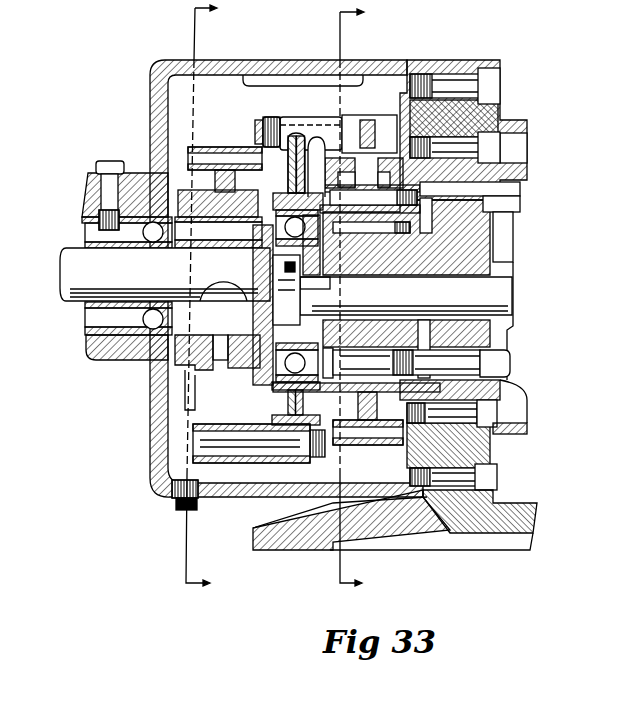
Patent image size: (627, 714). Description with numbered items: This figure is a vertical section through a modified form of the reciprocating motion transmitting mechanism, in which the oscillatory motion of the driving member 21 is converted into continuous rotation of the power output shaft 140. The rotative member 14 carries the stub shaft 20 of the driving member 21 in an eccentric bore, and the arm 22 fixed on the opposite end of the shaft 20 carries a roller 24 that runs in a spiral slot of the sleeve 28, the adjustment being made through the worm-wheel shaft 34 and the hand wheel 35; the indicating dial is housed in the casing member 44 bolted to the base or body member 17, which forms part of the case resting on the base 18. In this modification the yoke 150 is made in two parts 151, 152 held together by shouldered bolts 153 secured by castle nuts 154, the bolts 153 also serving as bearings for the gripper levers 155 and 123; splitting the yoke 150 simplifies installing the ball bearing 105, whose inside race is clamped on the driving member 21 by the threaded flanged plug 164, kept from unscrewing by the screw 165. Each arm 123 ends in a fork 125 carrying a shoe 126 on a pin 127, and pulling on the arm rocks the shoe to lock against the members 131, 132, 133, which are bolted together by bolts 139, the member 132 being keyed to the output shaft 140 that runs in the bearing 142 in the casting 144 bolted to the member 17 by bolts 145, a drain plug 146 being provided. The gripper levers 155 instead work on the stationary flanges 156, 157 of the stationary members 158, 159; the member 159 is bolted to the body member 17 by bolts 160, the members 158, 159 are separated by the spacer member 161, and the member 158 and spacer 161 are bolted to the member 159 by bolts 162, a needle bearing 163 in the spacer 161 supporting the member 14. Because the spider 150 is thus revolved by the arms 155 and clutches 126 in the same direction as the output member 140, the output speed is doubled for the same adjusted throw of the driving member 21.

The member 14 is at (462, 250).
The member 17 is at (480, 112).
The base 18 is at (515, 518).
The stub shaft 20 is at (406, 296).
The driving member 21 is at (320, 305).
The arm 22 is at (500, 232).
The roller 24 is at (500, 205).
The sleeve 28 is at (505, 180).
The shaft 34 is at (215, 297).
The hand wheel 35 is at (365, 298).
The casing member 44 is at (527, 430).
The ball bearing 105 is at (283, 372).
The arms 123 is at (225, 462).
The fork 125 is at (200, 150).
The shoe 126 is at (175, 167).
The pin 127 is at (220, 183).
The member 131 is at (227, 362).
The member 132 is at (207, 244).
The member 133 is at (212, 343).
The bolts 139 is at (218, 209).
The power output shaft 140 is at (165, 274).
The bearing 142 is at (150, 342).
The casting 144 is at (158, 106).
The bolts 145 is at (490, 80).
The drain plug 146 is at (175, 503).
The yoke 150 is at (302, 130).
The part 151 is at (290, 128).
The part 152 is at (318, 118).
The shouldered bolts 153 is at (278, 115).
The castle nuts 154 is at (264, 123).
The gripper levers 155 is at (383, 128).
The stationary flange 156 is at (355, 115).
The stationary flange 157 is at (440, 87).
The stationary member 158 is at (285, 397).
The stationary member 159 is at (427, 380).
The bolts 160 is at (490, 145).
The spacer member 161 is at (368, 338).
The bolts 162 is at (370, 185).
The needle bearing 163 is at (410, 232).
The threaded flanged plug 164 is at (280, 258).
The screw 165 is at (286, 290).